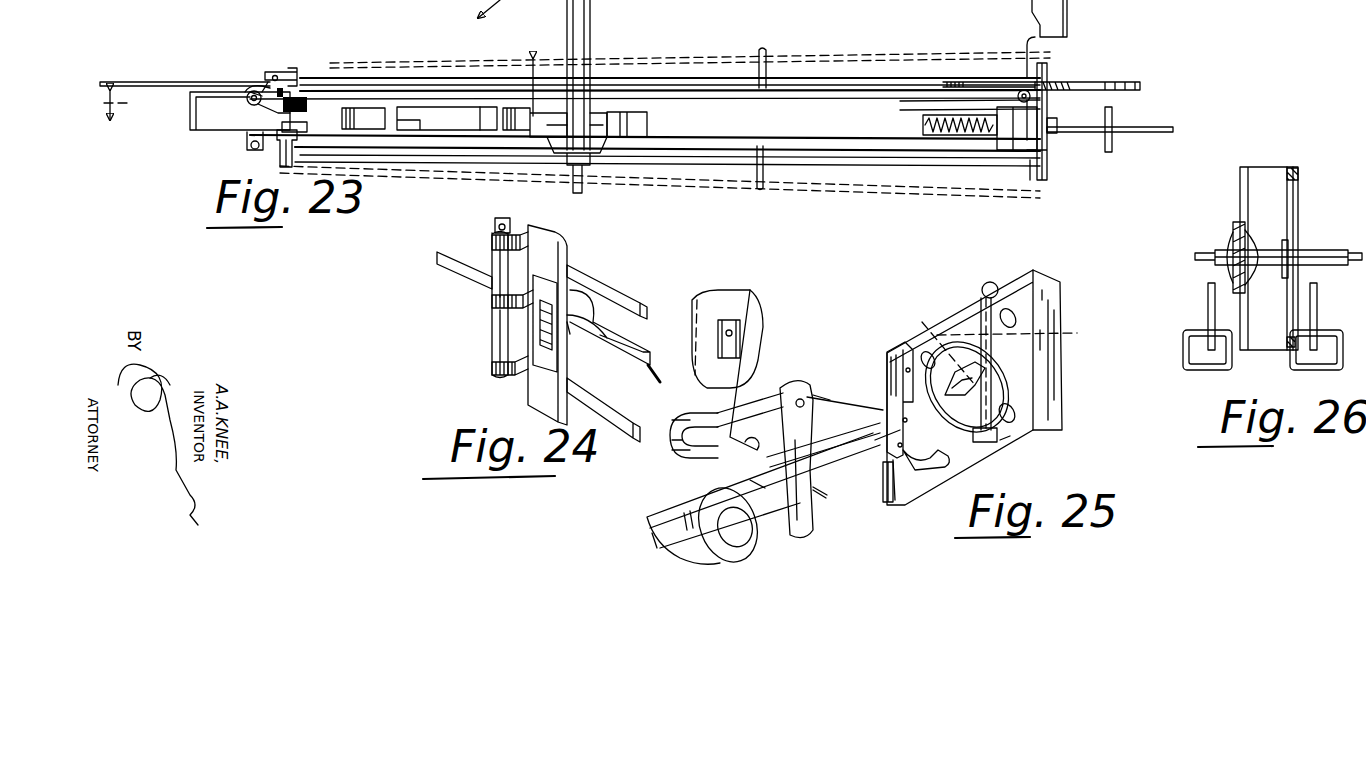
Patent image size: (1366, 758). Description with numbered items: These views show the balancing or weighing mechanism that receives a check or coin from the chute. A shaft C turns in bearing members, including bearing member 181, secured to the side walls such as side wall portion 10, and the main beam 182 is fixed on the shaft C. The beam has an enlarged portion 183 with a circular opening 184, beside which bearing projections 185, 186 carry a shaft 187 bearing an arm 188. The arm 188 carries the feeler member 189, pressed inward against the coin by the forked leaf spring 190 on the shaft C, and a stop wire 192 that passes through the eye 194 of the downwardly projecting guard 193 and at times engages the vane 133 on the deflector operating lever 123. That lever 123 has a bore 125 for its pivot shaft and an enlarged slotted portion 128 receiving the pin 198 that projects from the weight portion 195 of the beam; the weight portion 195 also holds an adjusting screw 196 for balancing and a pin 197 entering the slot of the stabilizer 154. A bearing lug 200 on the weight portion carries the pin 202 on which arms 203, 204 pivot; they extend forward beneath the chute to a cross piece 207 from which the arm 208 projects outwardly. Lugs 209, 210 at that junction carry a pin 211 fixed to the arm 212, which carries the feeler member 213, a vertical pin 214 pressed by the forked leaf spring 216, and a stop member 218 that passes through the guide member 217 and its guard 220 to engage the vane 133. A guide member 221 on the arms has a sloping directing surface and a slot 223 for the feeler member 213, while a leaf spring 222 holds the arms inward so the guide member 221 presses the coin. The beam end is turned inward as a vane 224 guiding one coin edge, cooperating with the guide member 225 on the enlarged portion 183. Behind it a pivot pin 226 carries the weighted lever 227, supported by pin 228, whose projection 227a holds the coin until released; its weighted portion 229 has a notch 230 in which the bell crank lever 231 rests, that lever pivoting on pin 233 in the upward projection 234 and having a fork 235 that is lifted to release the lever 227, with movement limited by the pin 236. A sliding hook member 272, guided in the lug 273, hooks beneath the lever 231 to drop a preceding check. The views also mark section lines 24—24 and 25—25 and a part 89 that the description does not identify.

In FIG. 25, the side wall portion 10 is at (730, 292).
In FIG. 23, the line 24— 24 is at (336, 80).
In FIG. 23, the line 25— 25 is at (126, 116).
In FIG. 23, the bracket 89 is at (305, 128).
In FIG. 23, the deflector operating member or bell crank lever 123 is at (1067, 22).
In FIG. 23, the bore 125 is at (535, 122).
In FIG. 23, the enlarged portion 128 is at (972, 82).
In FIG. 23, the plate or vane 133 is at (1030, 45).
In FIG. 23, the stabilizer 154 is at (1113, 112).
In FIG. 25, the bearing member 181 is at (928, 318).
In FIG. 23, the main member or beam 182 is at (440, 140).
In FIG. 25, the main member or beam 182 is at (885, 478).
In FIG. 25, the enlarged portion 183 is at (945, 315).
In FIG. 26, the enlarged portion 183 is at (1255, 170).
In FIG. 25, the circular opening 184 is at (1007, 331).
In FIG. 23, the bearing projection 185 is at (255, 149).
In FIG. 25, the bearing projection 185 is at (996, 288).
In FIG. 25, the bearing projection 186 is at (1010, 438).
In FIG. 23, the shaft 187 is at (247, 140).
In FIG. 25, the shaft 187 is at (988, 288).
In FIG. 23, the arm 188 is at (290, 167).
In FIG. 25, the feeler member 189 is at (990, 372).
In FIG. 23, the leaf spring member 190 is at (350, 150).
In FIG. 25, the leaf spring member 190 is at (952, 402).
In FIG. 23, the stop wire 192 is at (380, 166).
In FIG. 26, the stop wire 192 is at (1208, 310).
In FIG. 23, the guard 193 is at (765, 155).
In FIG. 26, the guard 193 is at (1233, 285).
In FIG. 23, the eye 194 is at (765, 186).
In FIG. 26, the eye 194 is at (1186, 365).
In FIG. 23, the weight portion 195 is at (1010, 150).
In FIG. 23, the adjusting screw 196 is at (925, 125).
In FIG. 23, the pin 197 is at (1173, 130).
In FIG. 23, the pin 198 is at (1047, 68).
In FIG. 23, the bearing lug 200 is at (1035, 85).
In FIG. 23, the pin or shaft 202 is at (1032, 96).
In FIG. 23, the arm 203 is at (440, 78).
In FIG. 24, the arm 203 is at (610, 290).
In FIG. 26, the arm 203 is at (1298, 176).
In FIG. 24, the arm 204 is at (595, 410).
In FIG. 26, the arm 204 is at (1284, 343).
In FIG. 24, the cross piece 207 is at (495, 262).
In FIG. 23, the arm 208 is at (205, 82).
In FIG. 24, the arm 208 is at (440, 265).
In FIG. 23, the lug 209 is at (250, 93).
In FIG. 24, the lug 209 is at (492, 240).
In FIG. 24, the lug 210 is at (492, 370).
In FIG. 23, the pin 211 is at (253, 91).
In FIG. 24, the pin 211 is at (510, 222).
In FIG. 23, the arm 212 is at (292, 72).
In FIG. 24, the arm 212 is at (492, 300).
In FIG. 23, the feeler member 213 is at (278, 111).
In FIG. 24, the feeler member 213 is at (535, 330).
In FIG. 23, the pin 214 is at (290, 72).
In FIG. 23, the leaf spring 216 is at (268, 72).
In FIG. 24, the leaf spring 216 is at (585, 290).
In FIG. 23, the guide member 217 is at (790, 90).
In FIG. 26, the guide member 217 is at (1298, 200).
In FIG. 23, the stop member 218 is at (700, 78).
In FIG. 24, the stop member 218 is at (655, 370).
In FIG. 26, the stop member 218 is at (1320, 296).
In FIG. 23, the guard 220 is at (768, 62).
In FIG. 26, the guard 220 is at (1345, 355).
In FIG. 23, the guide member 221 is at (308, 105).
In FIG. 24, the guide member 221 is at (555, 233).
In FIG. 23, the leaf spring 222 is at (905, 112).
In FIG. 26, the leaf spring 222 is at (1290, 240).
In FIG. 23, the slot 223 is at (1065, 82).
In FIG. 24, the slot 223 is at (575, 372).
In FIG. 23, the vane 224 is at (190, 108).
In FIG. 25, the vane 224 is at (1050, 282).
In FIG. 26, the vane 224 is at (1300, 170).
In FIG. 25, the guide member 225 is at (895, 348).
In FIG. 23, the pivot pin 226 is at (370, 127).
In FIG. 25, the pivot pin 226 is at (885, 490).
In FIG. 23, the weighted lever 227 is at (440, 128).
In FIG. 25, the weighted lever 227 is at (870, 470).
In FIG. 23, the projection 227a is at (385, 107).
In FIG. 25, the projection 227a is at (945, 465).
In FIG. 25, the pin 228 is at (818, 500).
In FIG. 25, the weighted portion 229 is at (798, 533).
In FIG. 25, the notch 230 is at (815, 420).
In FIG. 23, the bell crank lever 231 is at (598, 118).
In FIG. 25, the bell crank lever 231 is at (770, 395).
In FIG. 23, the pin 233 is at (580, 120).
In FIG. 25, the pin 233 is at (808, 400).
In FIG. 25, the projection 234 is at (803, 395).
In FIG. 23, the fork 235 is at (640, 125).
In FIG. 25, the fork 235 is at (678, 440).
In FIG. 25, the pin 236 is at (720, 480).
In FIG. 25, the sliding hook member 272 is at (755, 320).
In FIG. 25, the lug 273 is at (718, 340).
In FIG. 23, the shaft C is at (592, 30).
In FIG. 25, the shaft C is at (690, 560).
In FIG. 26, the shaft C is at (1225, 250).